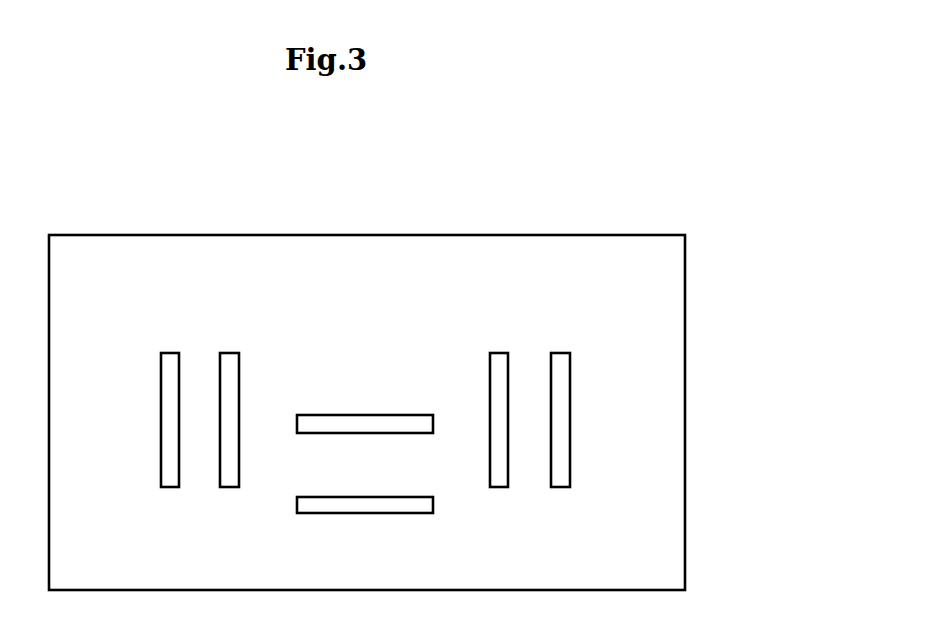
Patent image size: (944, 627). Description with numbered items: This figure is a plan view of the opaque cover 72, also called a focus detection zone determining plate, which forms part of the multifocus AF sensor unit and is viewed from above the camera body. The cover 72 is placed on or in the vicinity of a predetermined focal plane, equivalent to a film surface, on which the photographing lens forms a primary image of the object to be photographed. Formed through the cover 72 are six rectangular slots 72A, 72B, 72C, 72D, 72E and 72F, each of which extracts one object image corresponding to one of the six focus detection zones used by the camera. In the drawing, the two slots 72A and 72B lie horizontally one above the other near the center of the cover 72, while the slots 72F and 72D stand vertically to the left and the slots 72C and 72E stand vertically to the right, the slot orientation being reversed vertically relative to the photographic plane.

The cover 72 is at (665, 310).
The rectangular slot 72A is at (345, 422).
The rectangular slot 72B is at (398, 505).
The rectangular slot 72C is at (498, 365).
The rectangular slot 72D is at (230, 370).
The rectangular slot 72E is at (560, 365).
The rectangular slot 72F is at (170, 367).